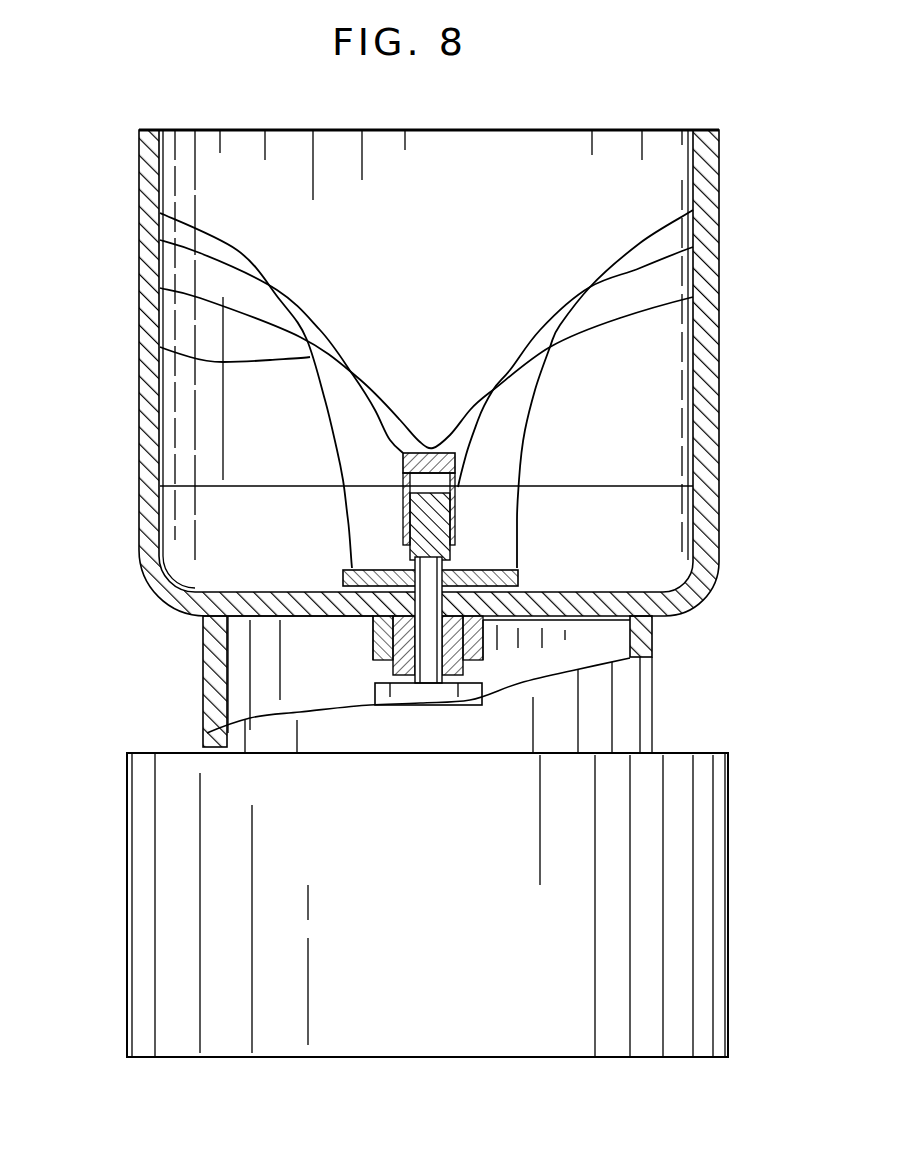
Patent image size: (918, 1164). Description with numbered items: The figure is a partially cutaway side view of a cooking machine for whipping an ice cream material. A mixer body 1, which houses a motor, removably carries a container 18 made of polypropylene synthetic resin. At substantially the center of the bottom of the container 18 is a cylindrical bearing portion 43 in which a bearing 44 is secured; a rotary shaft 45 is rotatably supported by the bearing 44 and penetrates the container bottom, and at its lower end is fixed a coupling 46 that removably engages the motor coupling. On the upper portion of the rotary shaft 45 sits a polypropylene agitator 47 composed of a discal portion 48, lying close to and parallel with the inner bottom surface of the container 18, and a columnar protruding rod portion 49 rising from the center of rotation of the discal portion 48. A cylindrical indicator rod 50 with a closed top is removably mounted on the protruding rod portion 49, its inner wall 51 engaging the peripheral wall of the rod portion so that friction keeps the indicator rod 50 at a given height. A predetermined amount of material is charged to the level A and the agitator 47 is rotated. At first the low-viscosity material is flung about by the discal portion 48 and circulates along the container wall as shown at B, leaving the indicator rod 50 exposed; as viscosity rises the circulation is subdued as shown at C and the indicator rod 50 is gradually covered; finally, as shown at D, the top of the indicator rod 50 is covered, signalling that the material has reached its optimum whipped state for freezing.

The mixer body 1 is at (720, 872).
The container 18 is at (712, 192).
The cylindrical bearing portion 43 is at (383, 650).
The bearing 44 is at (403, 665).
The rotary shaft 45 is at (427, 667).
The coupling 46 is at (473, 692).
The agitator 47 is at (482, 537).
The discal portion 48 is at (518, 578).
The protruding rod portion 49 is at (433, 527).
The cylindrical indicator rod 50 is at (449, 453).
The inner wall 51 is at (405, 503).
The material charge level A is at (187, 485).
The initial material circulation B is at (158, 345).
The subdued material circulation C is at (187, 251).
The final material circulation D is at (188, 300).